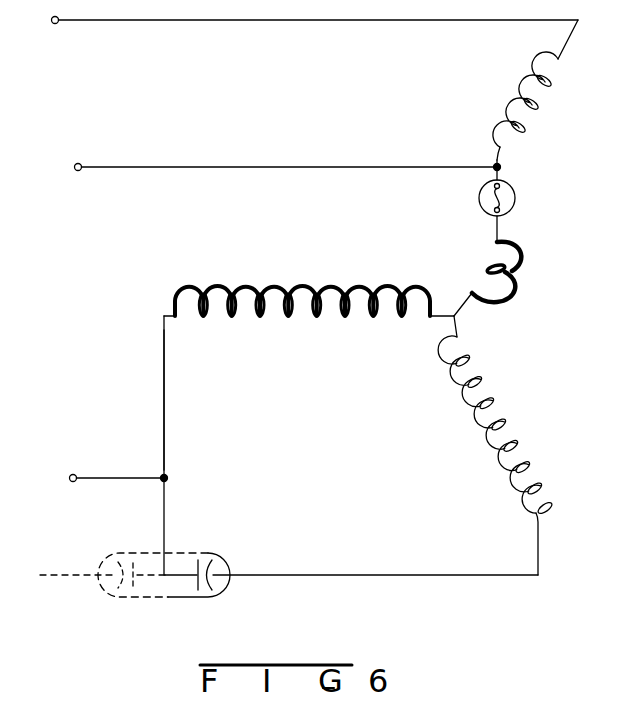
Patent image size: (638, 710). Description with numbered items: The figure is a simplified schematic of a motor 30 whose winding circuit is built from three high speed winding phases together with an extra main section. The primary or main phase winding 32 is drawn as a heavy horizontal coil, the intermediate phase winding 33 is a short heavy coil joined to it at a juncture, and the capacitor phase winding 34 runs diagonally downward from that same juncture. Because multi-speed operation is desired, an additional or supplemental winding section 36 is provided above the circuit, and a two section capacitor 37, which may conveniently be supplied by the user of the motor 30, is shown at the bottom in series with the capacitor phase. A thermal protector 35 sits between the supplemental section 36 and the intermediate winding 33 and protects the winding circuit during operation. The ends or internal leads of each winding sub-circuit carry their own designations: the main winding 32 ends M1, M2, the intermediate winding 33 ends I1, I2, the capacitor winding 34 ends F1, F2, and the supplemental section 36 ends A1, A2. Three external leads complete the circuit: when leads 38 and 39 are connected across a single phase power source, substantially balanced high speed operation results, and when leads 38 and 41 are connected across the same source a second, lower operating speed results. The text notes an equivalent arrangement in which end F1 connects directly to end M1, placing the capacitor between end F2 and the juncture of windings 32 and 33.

The motor 30 is at (262, 203).
The primary or main phase winding 32 is at (275, 318).
The intermediate phase winding 33 is at (514, 278).
The capacitor phase winding 34 is at (548, 401).
The thermal protector 35 is at (479, 200).
The additional or supplemental winding section 36 is at (545, 105).
The two section capacitor 37 is at (217, 556).
The lead 38 is at (115, 477).
The lead 39 is at (230, 166).
The lead 41 is at (242, 21).
The winding end A1 is at (503, 165).
The winding end A2 is at (572, 38).
The winding end F1 is at (540, 555).
The winding end F2 is at (446, 328).
The winding end I1 is at (461, 304).
The winding end I2 is at (500, 238).
The winding end M1 is at (166, 412).
The winding end M2 is at (441, 316).